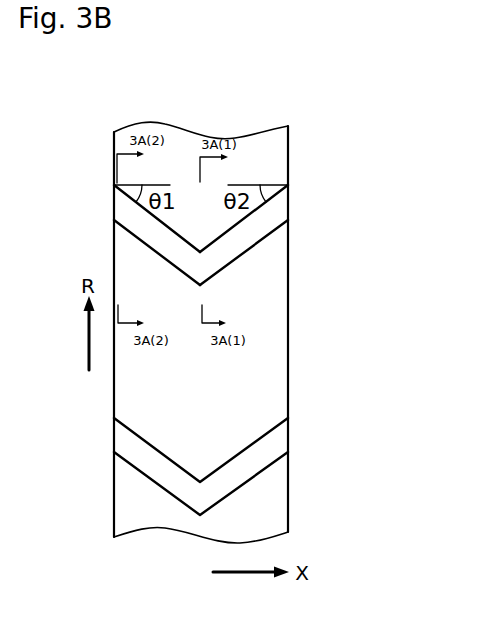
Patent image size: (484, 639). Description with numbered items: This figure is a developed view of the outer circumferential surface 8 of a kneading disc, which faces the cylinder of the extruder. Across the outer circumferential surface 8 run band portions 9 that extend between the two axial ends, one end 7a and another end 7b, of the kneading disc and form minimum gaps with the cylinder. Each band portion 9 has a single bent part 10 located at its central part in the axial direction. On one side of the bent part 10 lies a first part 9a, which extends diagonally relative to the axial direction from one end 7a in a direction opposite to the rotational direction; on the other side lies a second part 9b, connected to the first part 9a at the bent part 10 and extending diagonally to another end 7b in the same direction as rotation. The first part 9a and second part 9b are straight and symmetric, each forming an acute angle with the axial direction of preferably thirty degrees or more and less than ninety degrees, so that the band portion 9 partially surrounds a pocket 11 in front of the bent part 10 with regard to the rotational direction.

The outer circumferential surface 8 is at (201, 299).
The pocket 11 is at (191, 216).
The band portion 9 is at (200, 350).
The first part 9a is at (152, 236).
The second part 9b is at (257, 230).
The bent part 10 is at (203, 262).
The one end 7a is at (113, 394).
The another end 7b is at (288, 395).